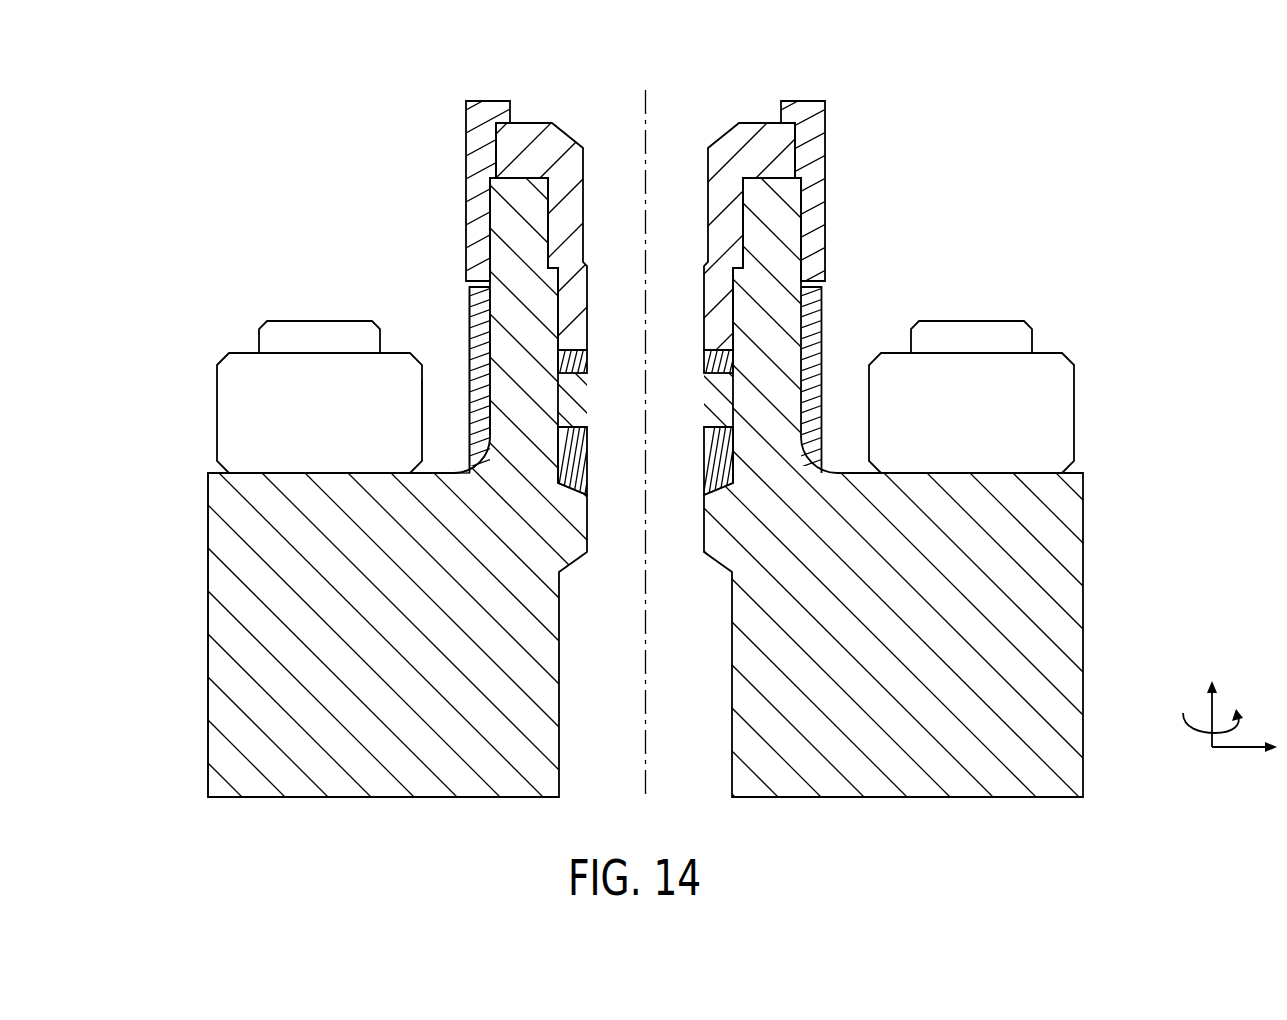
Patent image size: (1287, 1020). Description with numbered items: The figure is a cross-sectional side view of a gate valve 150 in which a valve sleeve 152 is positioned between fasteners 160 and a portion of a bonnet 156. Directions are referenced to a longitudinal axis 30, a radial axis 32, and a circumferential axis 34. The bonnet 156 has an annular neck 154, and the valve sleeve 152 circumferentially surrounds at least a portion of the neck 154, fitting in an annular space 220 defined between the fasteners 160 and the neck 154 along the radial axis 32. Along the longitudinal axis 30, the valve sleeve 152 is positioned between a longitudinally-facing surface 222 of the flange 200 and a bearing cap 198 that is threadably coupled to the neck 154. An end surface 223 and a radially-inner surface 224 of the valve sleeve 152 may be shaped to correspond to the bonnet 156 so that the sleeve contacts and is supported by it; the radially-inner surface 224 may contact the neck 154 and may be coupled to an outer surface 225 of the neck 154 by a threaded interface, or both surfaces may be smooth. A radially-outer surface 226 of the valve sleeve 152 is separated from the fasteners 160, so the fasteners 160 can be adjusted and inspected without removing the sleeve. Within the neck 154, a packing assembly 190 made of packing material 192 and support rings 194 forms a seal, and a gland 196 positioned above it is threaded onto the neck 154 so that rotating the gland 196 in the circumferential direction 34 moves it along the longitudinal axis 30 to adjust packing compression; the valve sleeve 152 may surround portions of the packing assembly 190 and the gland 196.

The gate valve 150 is at (711, 89).
The valve sleeve 152 is at (480, 300).
The neck 154 is at (506, 308).
The bonnet 156 is at (215, 706).
The fasteners 160 is at (232, 362).
The packing assembly 190 is at (533, 409).
The packing material 192 is at (570, 400).
The support rings 194 is at (575, 361).
The gland 196 is at (527, 131).
The bearing cap 198 is at (486, 108).
The flange 200 is at (218, 751).
The space 220 is at (440, 408).
The surface 222 is at (453, 473).
The end surface 223 is at (485, 455).
The radially-inner surface 224 is at (492, 393).
The outer surface 225 is at (493, 345).
The radially-outer surface 226 is at (470, 333).
The longitudinal axis 30 is at (1210, 713).
The radial axis 32 is at (1238, 748).
The circumferential axis 34 is at (1193, 732).